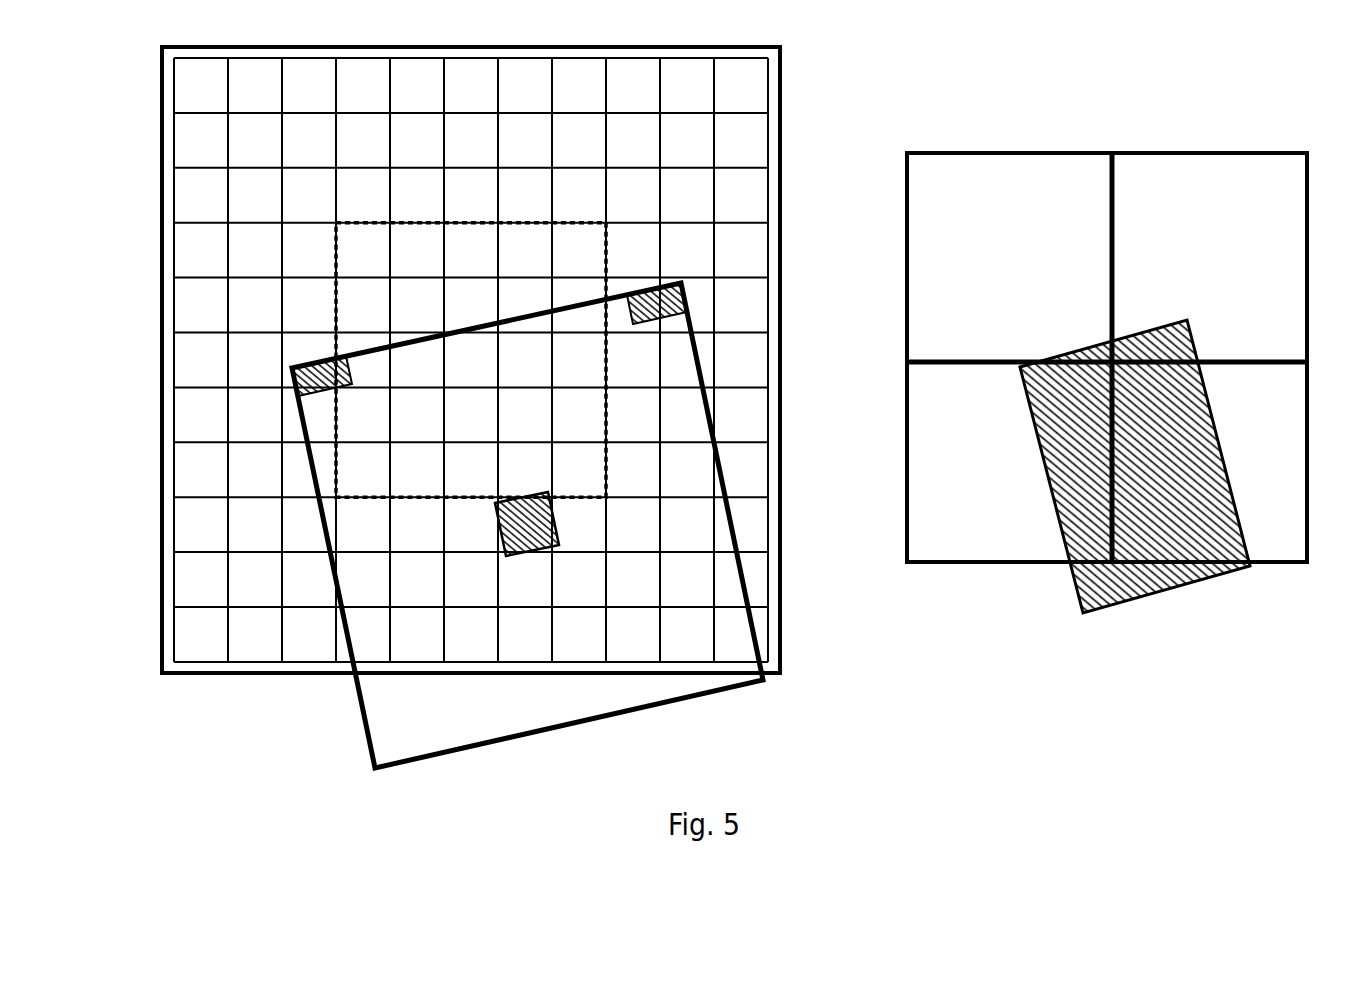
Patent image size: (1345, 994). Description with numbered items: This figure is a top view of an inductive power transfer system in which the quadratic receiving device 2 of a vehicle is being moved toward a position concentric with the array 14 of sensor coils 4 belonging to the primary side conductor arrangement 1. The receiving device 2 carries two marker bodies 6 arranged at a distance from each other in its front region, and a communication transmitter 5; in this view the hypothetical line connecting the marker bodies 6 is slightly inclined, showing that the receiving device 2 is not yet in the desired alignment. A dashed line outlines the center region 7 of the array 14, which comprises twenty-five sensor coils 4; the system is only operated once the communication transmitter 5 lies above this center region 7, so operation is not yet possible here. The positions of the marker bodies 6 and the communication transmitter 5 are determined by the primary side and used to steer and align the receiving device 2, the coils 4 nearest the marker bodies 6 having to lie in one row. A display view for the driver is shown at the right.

The conductor arrangement 1 is at (781, 76).
The receiving device 2 is at (715, 694).
The sensor coil 4 is at (726, 242).
The communication transmitter 5 is at (557, 535).
The marker body 6 is at (350, 386).
The center region 7 is at (608, 409).
The array 14 is at (781, 578).